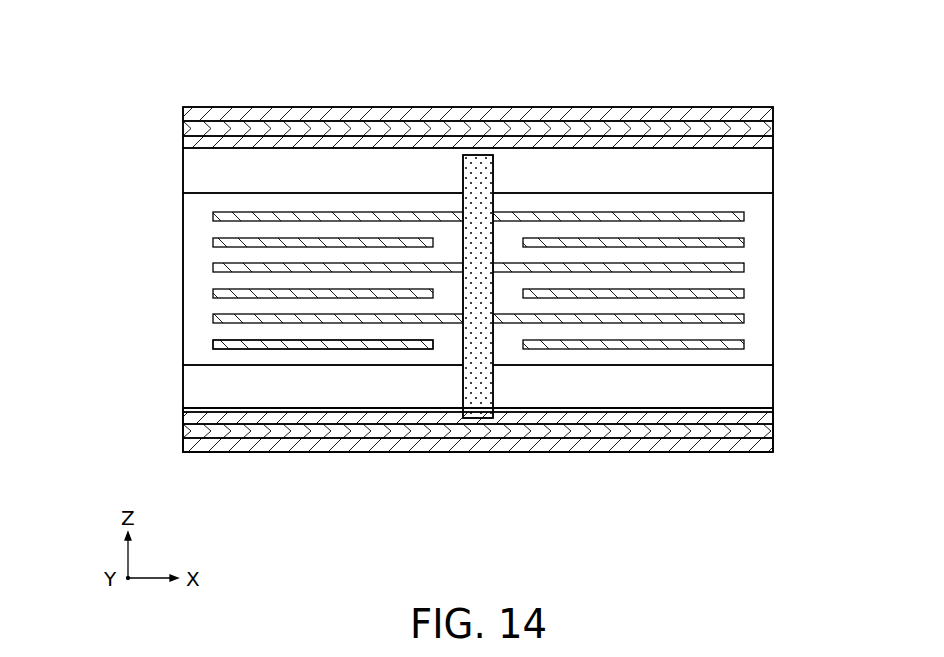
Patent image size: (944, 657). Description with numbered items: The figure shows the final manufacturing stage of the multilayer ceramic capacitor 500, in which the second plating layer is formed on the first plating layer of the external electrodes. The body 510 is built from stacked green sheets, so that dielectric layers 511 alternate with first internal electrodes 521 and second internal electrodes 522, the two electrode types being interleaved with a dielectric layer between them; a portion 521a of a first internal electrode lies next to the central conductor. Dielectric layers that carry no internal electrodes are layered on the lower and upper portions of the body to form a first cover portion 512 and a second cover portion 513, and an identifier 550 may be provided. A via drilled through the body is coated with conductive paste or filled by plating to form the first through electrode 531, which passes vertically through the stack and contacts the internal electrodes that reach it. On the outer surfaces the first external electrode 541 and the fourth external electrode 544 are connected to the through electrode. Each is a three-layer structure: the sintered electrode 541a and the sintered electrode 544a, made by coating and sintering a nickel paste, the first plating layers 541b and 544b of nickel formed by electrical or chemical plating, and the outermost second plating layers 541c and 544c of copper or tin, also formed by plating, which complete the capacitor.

The multilayer electronic component 500 is at (325, 30).
The body 510 is at (540, 409).
The dielectric layer 511 is at (740, 307).
The first cover portion 512 is at (776, 380).
The second cover portion 513 is at (768, 169).
The first internal electrode 521 is at (213, 318).
The end portion of first internal electrode 521a is at (447, 344).
The second internal electrode 522 is at (745, 346).
The first through electrode 531 is at (477, 160).
The first external electrode 541 is at (410, 434).
The first layer of first external electrode 541a is at (183, 420).
The second layer of first external electrode 541b is at (183, 428).
The third layer of first external electrode 541c is at (183, 452).
The fourth external electrode 544 is at (410, 125).
The first layer of second external electrode 544a is at (183, 141).
The second layer of second external electrode 544b is at (183, 124).
The third layer of second external electrode 544c is at (183, 108).
The identifier 550 is at (300, 414).